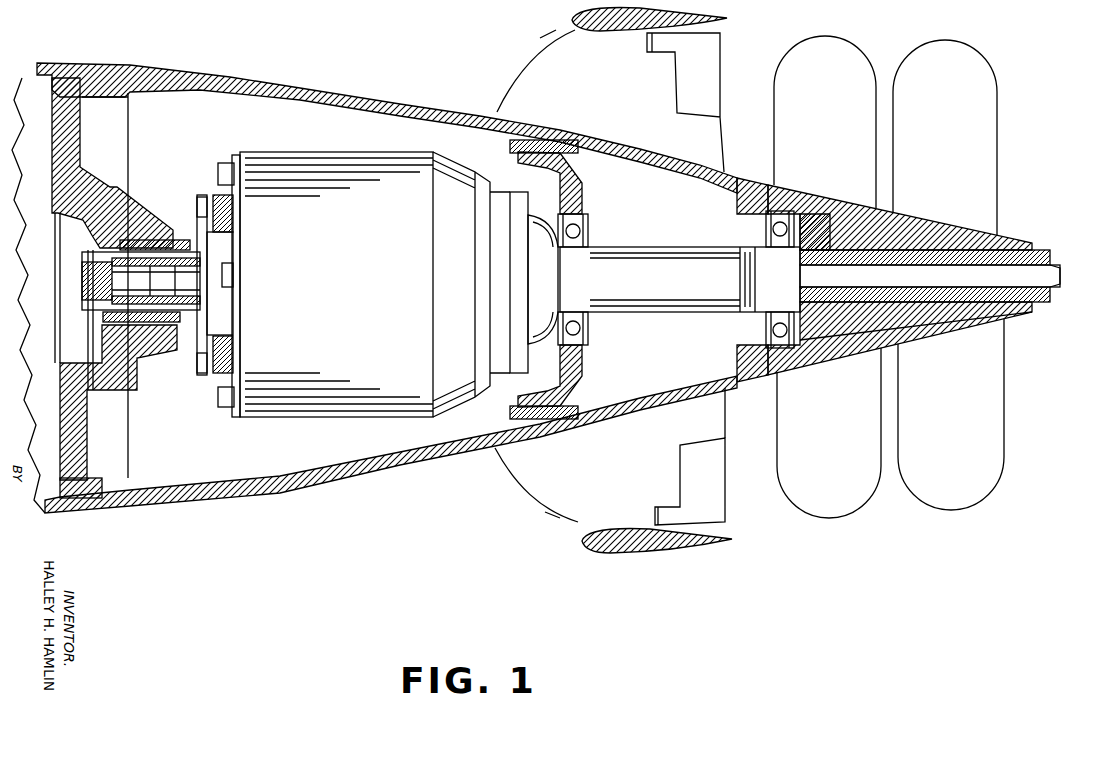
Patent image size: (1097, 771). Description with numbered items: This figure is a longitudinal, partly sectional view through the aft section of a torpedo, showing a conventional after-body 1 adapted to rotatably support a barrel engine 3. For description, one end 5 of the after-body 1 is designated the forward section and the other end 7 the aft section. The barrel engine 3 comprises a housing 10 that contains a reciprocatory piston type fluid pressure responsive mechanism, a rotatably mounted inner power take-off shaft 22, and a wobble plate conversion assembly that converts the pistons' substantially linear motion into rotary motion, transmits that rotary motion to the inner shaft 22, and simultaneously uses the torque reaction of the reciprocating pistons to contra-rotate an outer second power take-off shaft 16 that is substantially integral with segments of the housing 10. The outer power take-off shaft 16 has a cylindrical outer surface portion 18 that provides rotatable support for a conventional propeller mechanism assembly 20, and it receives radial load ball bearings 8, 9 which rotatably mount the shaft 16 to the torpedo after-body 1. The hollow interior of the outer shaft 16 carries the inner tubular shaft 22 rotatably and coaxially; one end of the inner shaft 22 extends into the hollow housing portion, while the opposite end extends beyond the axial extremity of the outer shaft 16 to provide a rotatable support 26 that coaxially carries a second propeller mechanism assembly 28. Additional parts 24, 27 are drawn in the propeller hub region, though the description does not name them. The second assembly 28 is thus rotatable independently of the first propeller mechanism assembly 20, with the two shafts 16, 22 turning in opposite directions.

The after-body 1 is at (158, 60).
The barrel engine 3 is at (300, 150).
The forward end of after-body 5 is at (52, 270).
The aft end of after-body 7 is at (1013, 320).
The radial load ball bearing 8 is at (590, 218).
The radial load ball bearing 9 is at (770, 214).
The housing 10 is at (340, 418).
The outer power take-off shaft 16 is at (647, 263).
The cylindrical outer surface portion 18 is at (846, 240).
The propeller mechanism assembly 20 is at (832, 373).
The inner power take-off shaft 22 is at (1035, 278).
The hub cone 24 is at (897, 232).
The rotatable support 26 is at (984, 245).
The sleeve 27 is at (950, 232).
The second propeller mechanism assembly 28 is at (952, 330).